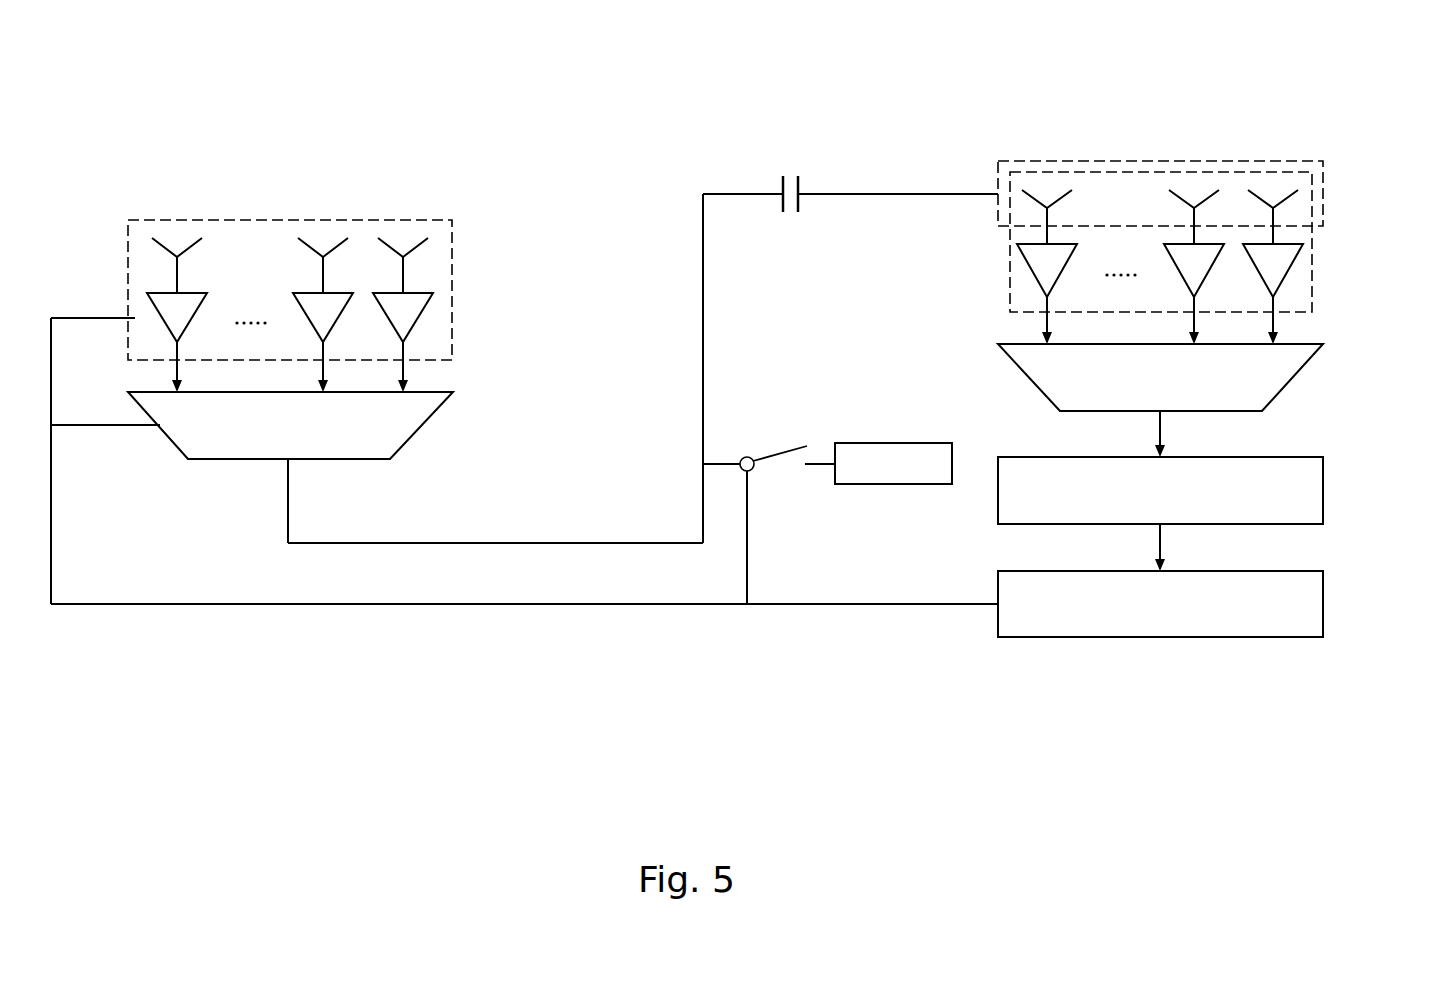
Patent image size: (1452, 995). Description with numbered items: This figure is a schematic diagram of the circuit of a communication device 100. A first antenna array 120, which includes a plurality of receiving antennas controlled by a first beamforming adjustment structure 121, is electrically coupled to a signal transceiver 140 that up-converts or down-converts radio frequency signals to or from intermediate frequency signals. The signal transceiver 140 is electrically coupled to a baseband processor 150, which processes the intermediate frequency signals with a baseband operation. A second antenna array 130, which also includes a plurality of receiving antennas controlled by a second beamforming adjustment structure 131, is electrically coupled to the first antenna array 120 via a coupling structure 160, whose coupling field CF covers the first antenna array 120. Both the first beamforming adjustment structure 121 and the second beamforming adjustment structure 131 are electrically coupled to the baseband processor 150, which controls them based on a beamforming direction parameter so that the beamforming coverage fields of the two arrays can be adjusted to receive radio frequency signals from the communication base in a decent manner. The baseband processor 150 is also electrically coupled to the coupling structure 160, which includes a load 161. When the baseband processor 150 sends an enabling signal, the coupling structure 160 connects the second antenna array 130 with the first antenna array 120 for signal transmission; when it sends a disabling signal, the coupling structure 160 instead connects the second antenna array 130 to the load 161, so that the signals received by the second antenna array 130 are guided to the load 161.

The communication device 100 is at (1197, 26).
The first antenna array 120 is at (1312, 258).
The first beamforming adjustment structure 121 is at (1275, 390).
The second antenna array 130 is at (409, 220).
The second beamforming adjustment structure 131 is at (418, 430).
The signal transceiver 140 is at (1323, 490).
The baseband processor 150 is at (1323, 603).
The coupling structure 160 is at (748, 164).
The load 161 is at (893, 443).
The coupling field CF is at (1092, 161).